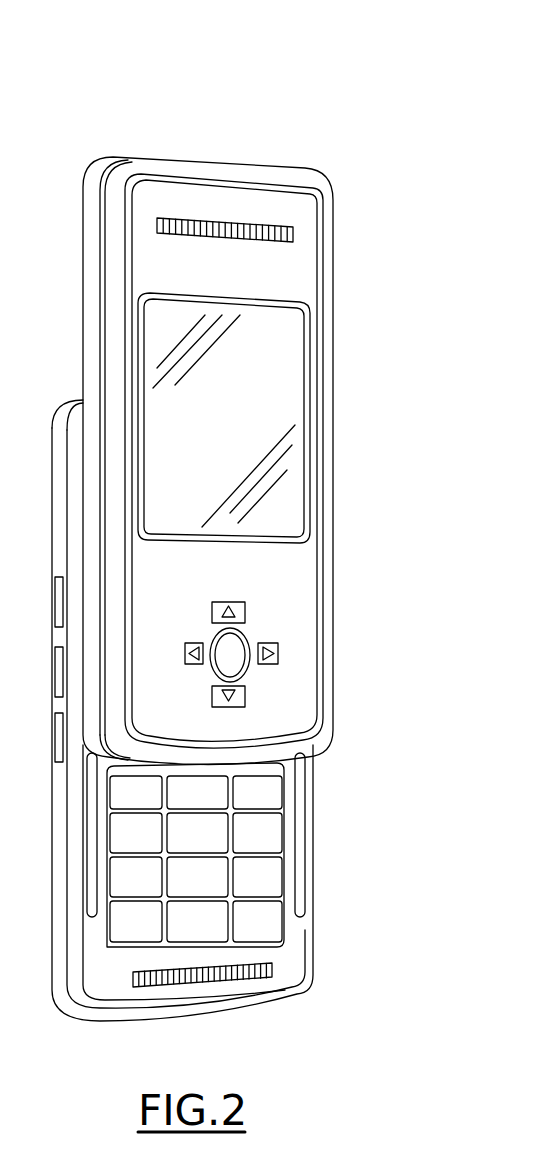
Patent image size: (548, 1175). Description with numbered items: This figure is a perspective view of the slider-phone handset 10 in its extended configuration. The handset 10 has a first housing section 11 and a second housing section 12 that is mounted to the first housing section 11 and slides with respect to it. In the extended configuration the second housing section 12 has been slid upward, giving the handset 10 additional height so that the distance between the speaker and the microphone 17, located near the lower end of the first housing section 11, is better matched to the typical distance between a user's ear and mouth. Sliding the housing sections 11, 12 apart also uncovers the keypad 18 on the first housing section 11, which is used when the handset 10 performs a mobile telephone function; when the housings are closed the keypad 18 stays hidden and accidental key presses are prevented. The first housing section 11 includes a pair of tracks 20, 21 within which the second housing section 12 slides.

The handset 10 is at (220, 536).
The first housing section 11 is at (55, 455).
The second housing section 12 is at (305, 218).
The microphone 17 is at (258, 982).
The keypad 18 is at (292, 938).
The track 20 is at (300, 832).
The track 21 is at (93, 825).